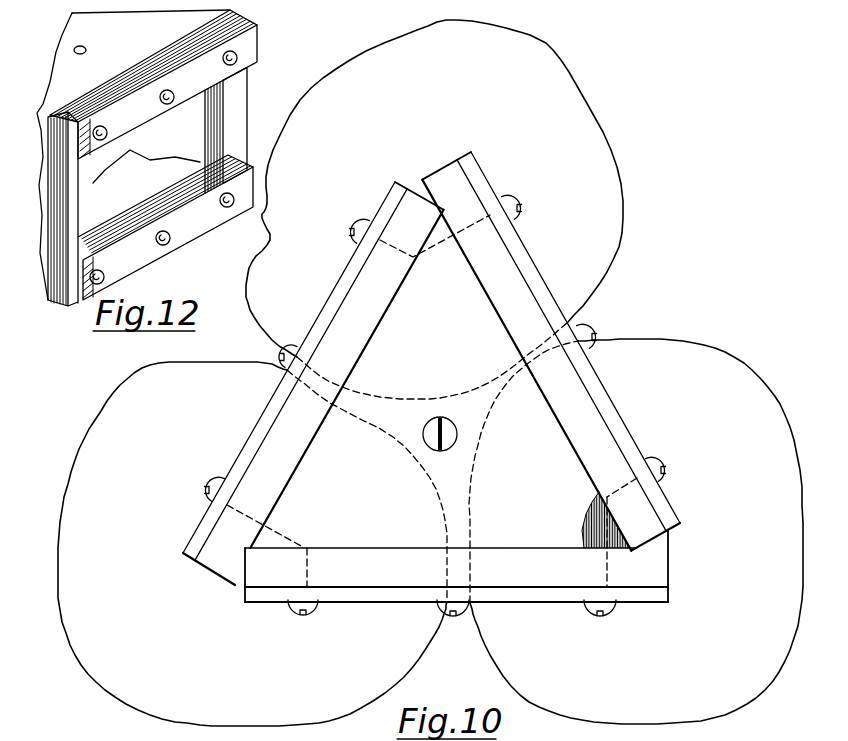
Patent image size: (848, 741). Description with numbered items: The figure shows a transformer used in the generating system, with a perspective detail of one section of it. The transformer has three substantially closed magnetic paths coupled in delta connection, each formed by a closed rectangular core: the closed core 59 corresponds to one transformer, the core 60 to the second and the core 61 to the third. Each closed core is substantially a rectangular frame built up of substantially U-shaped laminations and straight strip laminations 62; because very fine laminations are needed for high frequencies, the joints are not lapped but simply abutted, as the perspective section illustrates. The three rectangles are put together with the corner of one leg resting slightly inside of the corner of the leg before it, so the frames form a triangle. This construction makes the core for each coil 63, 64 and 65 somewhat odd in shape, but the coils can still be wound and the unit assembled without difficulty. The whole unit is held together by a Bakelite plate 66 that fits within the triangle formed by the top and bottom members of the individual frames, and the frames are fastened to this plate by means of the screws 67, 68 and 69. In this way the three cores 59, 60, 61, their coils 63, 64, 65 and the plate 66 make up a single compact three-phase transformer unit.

In FIG. 10, the closed core 59 is at (455, 193).
In FIG. 10, the core 60 is at (273, 570).
In FIG. 12, the core 61 is at (243, 115).
In FIG. 10, the core 61 is at (637, 513).
In FIG. 12, the straight strip laminations 62 is at (246, 14).
In FIG. 10, the coil 63 is at (707, 373).
In FIG. 10, the coil 64 is at (610, 192).
In FIG. 10, the coil 65 is at (160, 668).
In FIG. 10, the Bakelite plate 66 is at (478, 300).
In FIG. 10, the screw 67 is at (593, 336).
In FIG. 10, the screw 68 is at (282, 368).
In FIG. 10, the screw 69 is at (444, 617).